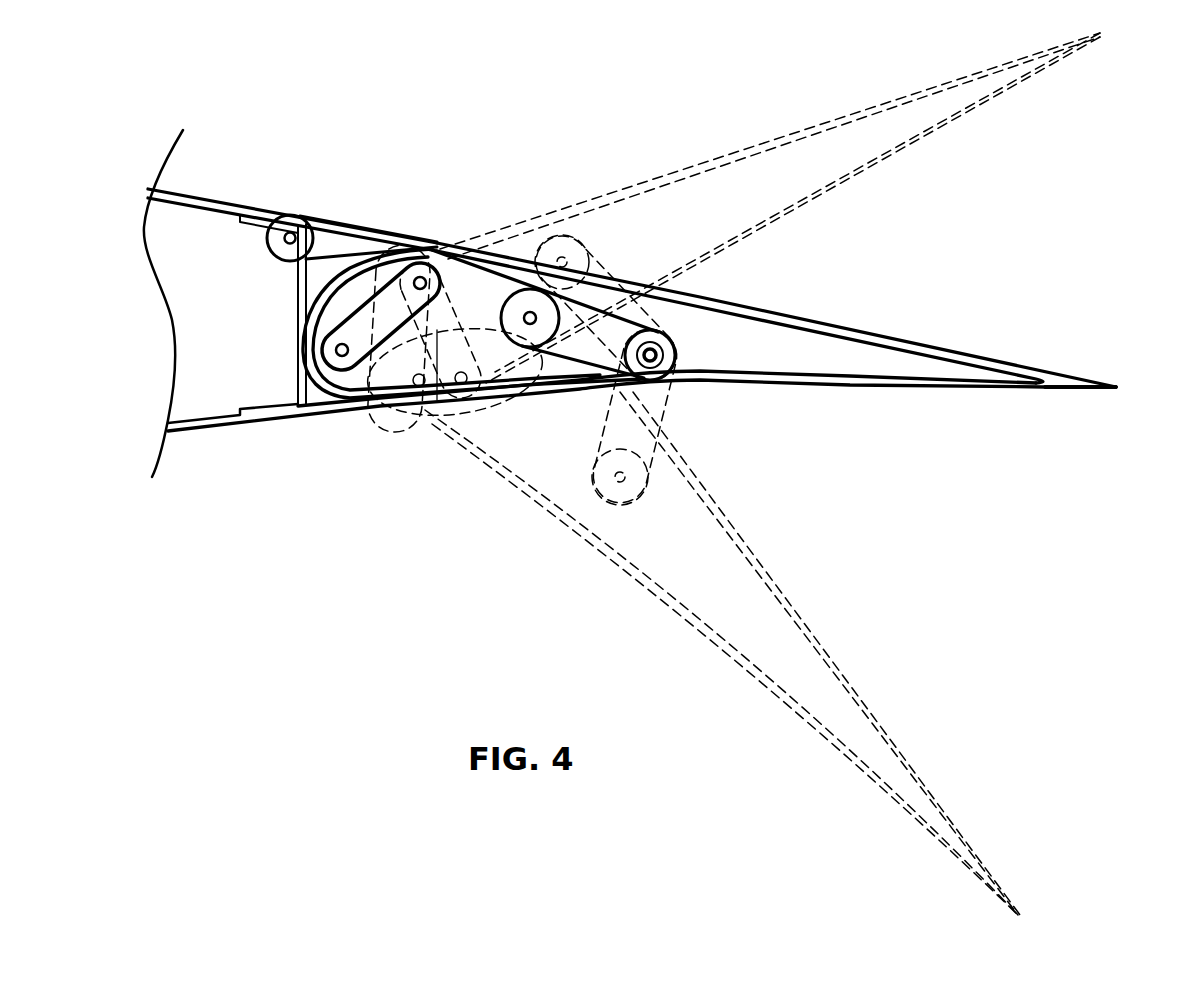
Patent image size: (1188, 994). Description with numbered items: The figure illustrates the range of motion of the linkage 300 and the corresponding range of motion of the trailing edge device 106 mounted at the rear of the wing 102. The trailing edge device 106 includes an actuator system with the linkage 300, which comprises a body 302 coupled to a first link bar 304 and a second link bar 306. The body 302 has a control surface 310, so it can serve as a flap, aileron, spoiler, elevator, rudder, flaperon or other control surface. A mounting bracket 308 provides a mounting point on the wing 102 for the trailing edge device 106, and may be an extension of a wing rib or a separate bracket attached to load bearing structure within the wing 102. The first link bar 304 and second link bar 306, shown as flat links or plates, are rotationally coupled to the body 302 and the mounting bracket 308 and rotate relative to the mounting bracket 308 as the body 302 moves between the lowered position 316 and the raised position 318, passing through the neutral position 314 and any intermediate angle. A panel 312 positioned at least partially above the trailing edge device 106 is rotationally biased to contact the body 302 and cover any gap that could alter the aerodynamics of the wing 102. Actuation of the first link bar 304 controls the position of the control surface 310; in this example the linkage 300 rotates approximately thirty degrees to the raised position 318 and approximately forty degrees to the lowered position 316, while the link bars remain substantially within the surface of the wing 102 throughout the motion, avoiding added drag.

The wing 102 is at (230, 200).
The trailing edge device 106 is at (965, 302).
The linkage 300 is at (342, 432).
The body 302 is at (800, 353).
The first link bar 304 is at (533, 306).
The second link bar 306 is at (437, 258).
The mounting bracket 308 is at (313, 282).
The control surface 310 is at (743, 307).
The panel 312 is at (342, 216).
The neutral position 314 is at (1112, 428).
The lowered position 316 is at (1030, 858).
The raised position 318 is at (1110, 75).